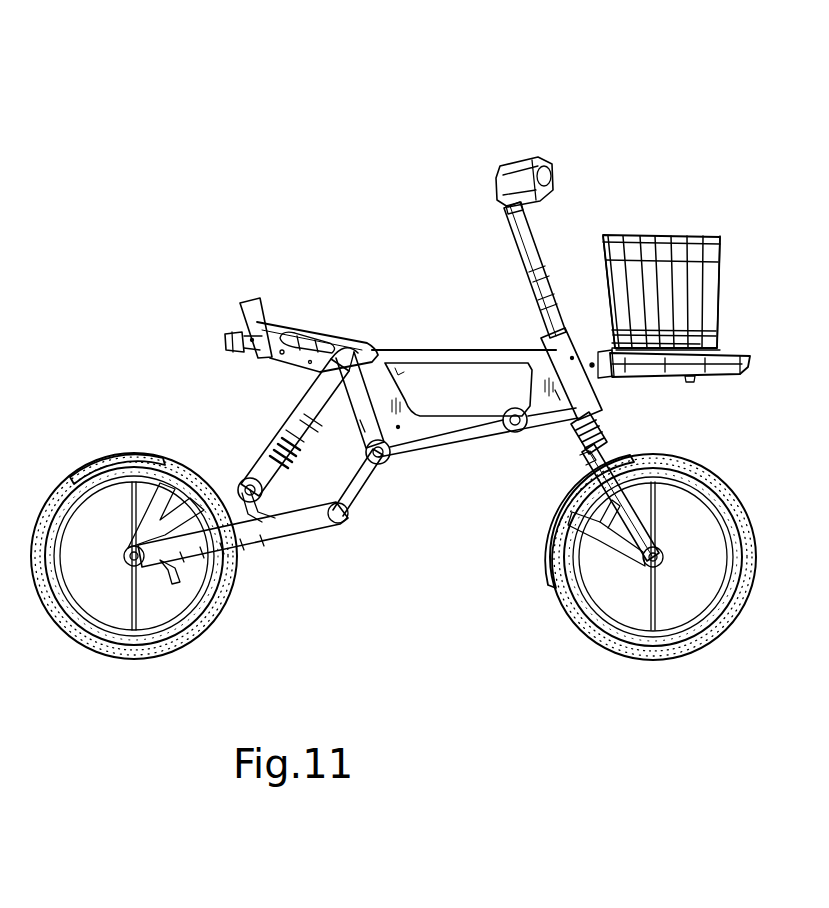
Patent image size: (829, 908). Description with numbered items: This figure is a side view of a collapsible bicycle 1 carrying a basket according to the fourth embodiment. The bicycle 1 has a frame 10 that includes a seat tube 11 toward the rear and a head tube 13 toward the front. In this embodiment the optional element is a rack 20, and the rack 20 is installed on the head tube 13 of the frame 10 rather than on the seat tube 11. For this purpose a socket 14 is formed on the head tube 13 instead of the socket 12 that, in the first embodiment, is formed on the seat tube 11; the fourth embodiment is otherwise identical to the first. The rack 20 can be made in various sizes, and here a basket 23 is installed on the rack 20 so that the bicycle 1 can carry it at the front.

The collapsible bicycle 1 is at (563, 118).
The frame 10 is at (440, 352).
The seat tube 11 is at (258, 300).
The socket 12 is at (236, 330).
The head tube 13 is at (568, 350).
The socket 14 is at (592, 350).
The rack 20 is at (735, 352).
The basket 23 is at (720, 235).